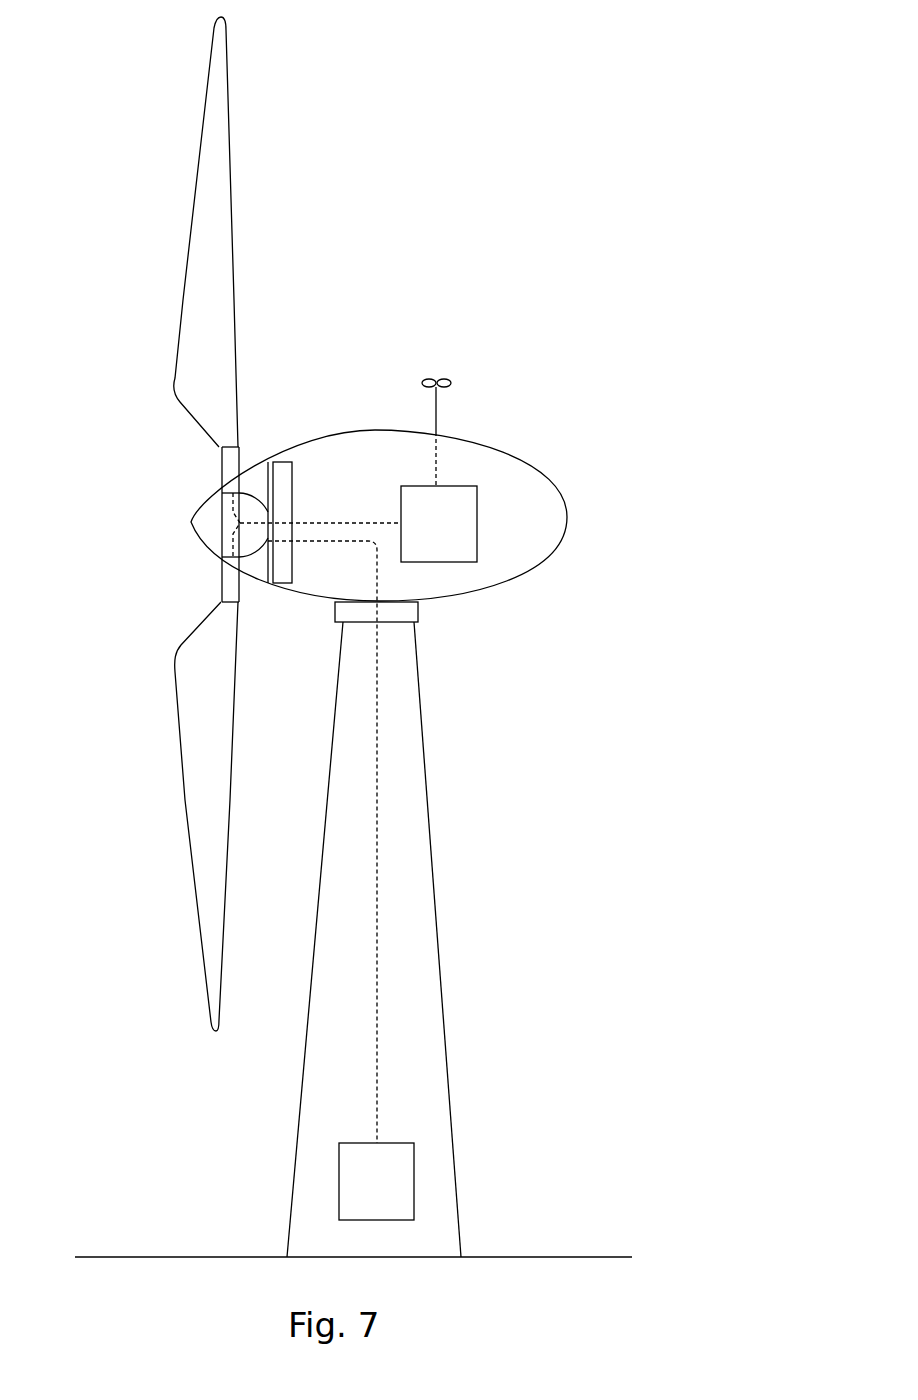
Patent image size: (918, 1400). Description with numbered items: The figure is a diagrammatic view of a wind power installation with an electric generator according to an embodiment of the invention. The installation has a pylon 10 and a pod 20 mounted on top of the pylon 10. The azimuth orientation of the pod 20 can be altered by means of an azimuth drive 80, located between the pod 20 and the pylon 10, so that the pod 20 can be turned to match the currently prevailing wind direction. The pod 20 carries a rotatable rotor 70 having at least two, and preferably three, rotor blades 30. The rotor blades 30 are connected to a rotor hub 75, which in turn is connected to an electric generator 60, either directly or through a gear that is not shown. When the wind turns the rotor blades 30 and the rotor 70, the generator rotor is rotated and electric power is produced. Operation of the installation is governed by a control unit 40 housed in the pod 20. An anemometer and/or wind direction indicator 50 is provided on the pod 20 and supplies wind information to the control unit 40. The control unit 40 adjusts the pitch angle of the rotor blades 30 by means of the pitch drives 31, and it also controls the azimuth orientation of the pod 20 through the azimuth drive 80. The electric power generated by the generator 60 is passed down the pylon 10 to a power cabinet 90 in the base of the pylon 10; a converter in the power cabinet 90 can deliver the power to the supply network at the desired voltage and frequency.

The pylon 10 is at (428, 807).
The pod 20 is at (537, 507).
The rotor blades 30 is at (236, 317).
The pitch drives 31 is at (236, 484).
The control unit 40 is at (439, 524).
The anemometer and/or wind direction indicator 50 is at (449, 384).
The electric generator 60 is at (283, 492).
The rotor 70 is at (205, 537).
The rotor hub 75 is at (222, 523).
The azimuth drive 80 is at (418, 608).
The power cabinet 90 is at (393, 1180).